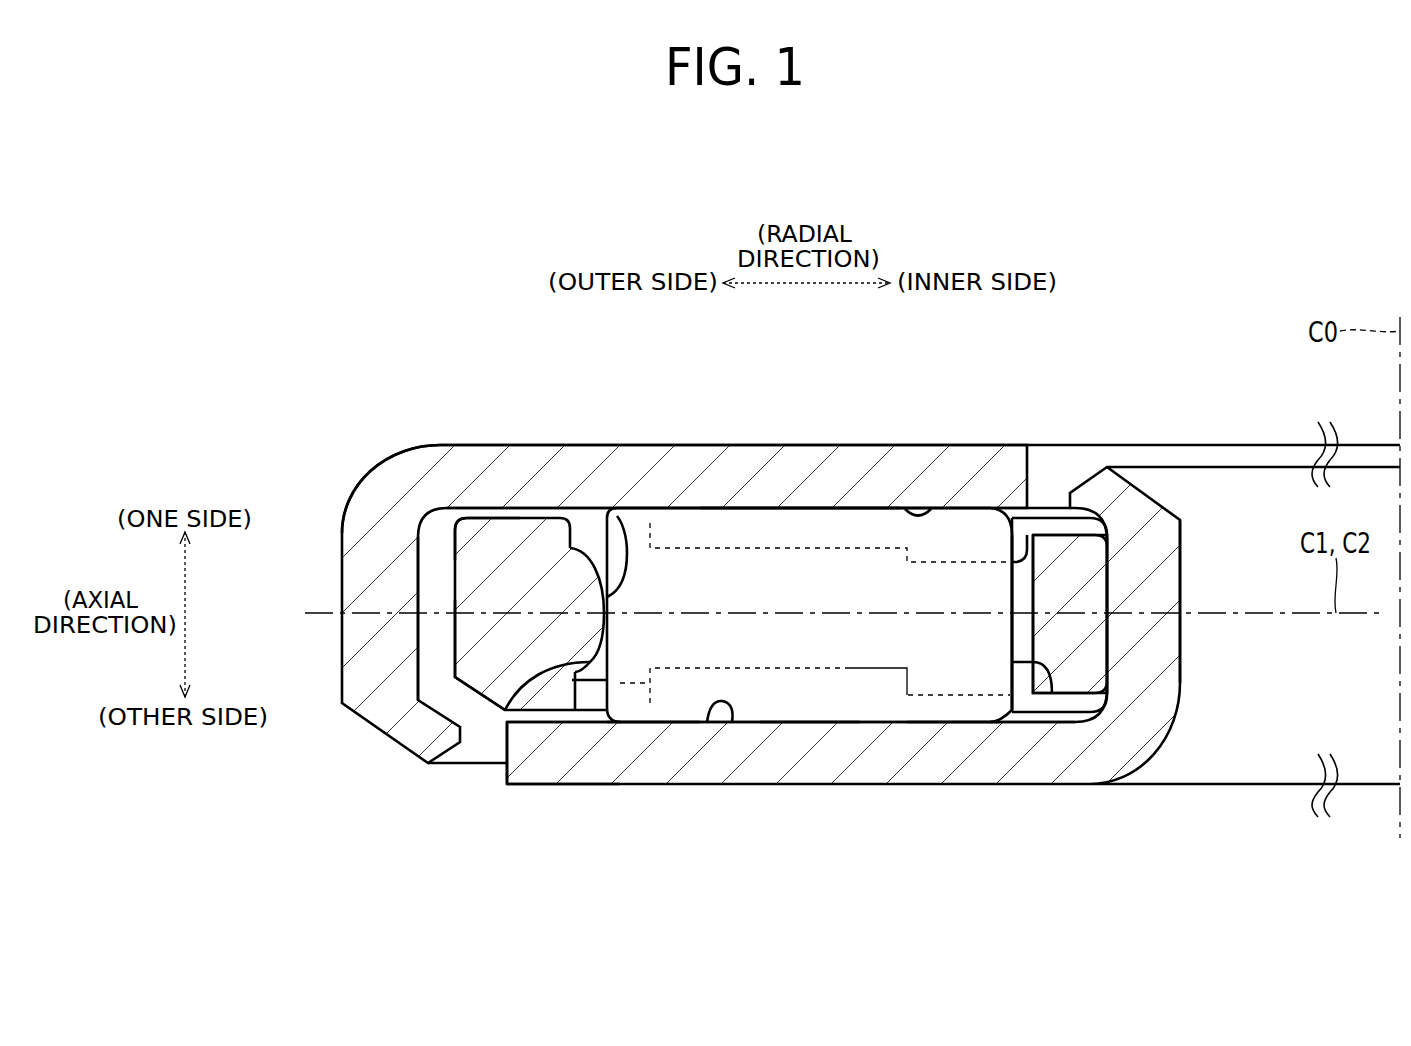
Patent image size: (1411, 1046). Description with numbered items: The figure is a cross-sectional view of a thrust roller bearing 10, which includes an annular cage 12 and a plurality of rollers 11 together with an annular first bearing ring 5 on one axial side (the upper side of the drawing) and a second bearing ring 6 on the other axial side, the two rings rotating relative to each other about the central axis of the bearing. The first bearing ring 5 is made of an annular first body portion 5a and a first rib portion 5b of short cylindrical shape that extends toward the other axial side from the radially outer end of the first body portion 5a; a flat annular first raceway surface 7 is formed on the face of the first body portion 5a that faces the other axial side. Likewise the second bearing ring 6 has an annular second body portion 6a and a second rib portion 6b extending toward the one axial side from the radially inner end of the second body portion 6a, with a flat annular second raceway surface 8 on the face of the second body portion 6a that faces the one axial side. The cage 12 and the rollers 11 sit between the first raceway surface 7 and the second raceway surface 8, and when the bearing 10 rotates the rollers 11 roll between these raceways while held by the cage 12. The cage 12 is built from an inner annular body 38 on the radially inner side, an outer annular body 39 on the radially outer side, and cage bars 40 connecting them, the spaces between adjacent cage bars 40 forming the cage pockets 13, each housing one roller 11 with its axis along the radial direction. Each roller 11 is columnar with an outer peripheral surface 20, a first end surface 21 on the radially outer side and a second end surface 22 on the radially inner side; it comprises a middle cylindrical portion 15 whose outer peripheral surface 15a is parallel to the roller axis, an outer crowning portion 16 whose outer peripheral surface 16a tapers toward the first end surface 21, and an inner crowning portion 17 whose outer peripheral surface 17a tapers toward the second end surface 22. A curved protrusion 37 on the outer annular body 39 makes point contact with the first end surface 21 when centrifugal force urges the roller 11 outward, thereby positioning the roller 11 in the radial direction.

The first bearing ring 5 is at (698, 443).
The first body portion 5a is at (738, 488).
The first rib portion 5b is at (367, 590).
The second bearing ring 6 is at (925, 787).
The second body portion 6a is at (755, 753).
The second rib portion 6b is at (1155, 655).
The first raceway surface 7 is at (921, 510).
The second raceway surface 8 is at (707, 723).
The thrust roller bearing 10 is at (398, 451).
The roller 11 is at (790, 507).
The cage 12 is at (453, 570).
The cage pocket 13 is at (576, 512).
The cylindrical portion 15 is at (836, 560).
The outer peripheral surface of the cylindrical portion 15a is at (807, 723).
The outer crowning portion 16 is at (636, 522).
The outer peripheral surface of the outer crowning portion 16a is at (630, 723).
The inner crowning portion 17 is at (980, 533).
The outer peripheral surface of the inner crowning portion 17a is at (987, 723).
The outer peripheral surface 20 is at (663, 723).
The first end surface 21 is at (503, 708).
The second end surface 22 is at (1050, 680).
The protrusion 37 is at (619, 516).
The inner annular body 38 is at (1075, 580).
The outer annular body 39 is at (475, 648).
The cage bar 40 is at (850, 668).